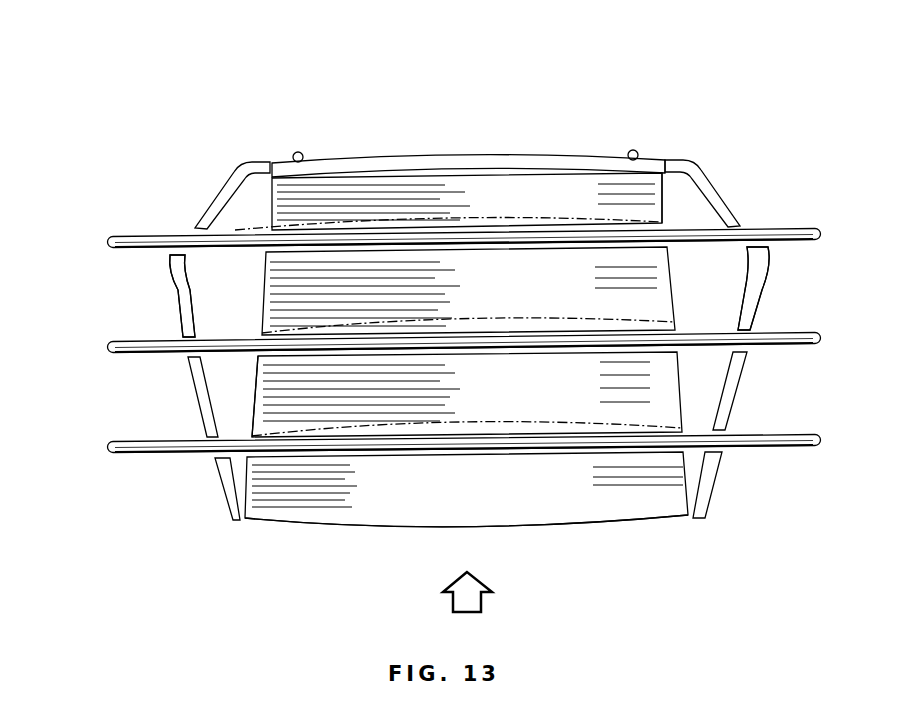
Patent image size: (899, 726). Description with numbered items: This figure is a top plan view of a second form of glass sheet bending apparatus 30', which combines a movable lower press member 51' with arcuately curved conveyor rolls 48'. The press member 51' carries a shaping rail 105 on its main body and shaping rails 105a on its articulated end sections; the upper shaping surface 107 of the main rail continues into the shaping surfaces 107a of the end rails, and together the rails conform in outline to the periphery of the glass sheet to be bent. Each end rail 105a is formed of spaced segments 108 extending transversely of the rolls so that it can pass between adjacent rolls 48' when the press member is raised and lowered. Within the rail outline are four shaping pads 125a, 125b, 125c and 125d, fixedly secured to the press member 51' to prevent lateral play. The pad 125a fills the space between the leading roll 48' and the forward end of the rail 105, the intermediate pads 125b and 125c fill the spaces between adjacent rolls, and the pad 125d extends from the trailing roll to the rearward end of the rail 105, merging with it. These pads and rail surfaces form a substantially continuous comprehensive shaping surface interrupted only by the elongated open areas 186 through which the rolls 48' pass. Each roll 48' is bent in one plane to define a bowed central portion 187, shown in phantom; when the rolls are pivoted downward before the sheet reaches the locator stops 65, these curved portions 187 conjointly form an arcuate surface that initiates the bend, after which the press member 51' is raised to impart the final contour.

The bending apparatus 30' is at (719, 77).
The conveyor rolls 48' is at (475, 343).
The lower press member 51' is at (439, 556).
The locator stops 65 is at (296, 152).
The shaping rail 105 is at (503, 151).
The shaping rail 105a is at (160, 284).
The shaping surface 107 is at (428, 161).
The upper shaping surface 107a is at (168, 262).
The segments 108 is at (177, 318).
The shaping pad 125a is at (342, 186).
The shaping pad 125b is at (272, 287).
The shaping pad 125c is at (675, 381).
The shaping pad 125d is at (610, 507).
The open areas 186 is at (670, 244).
The arcuately curved central portion 187 is at (502, 215).